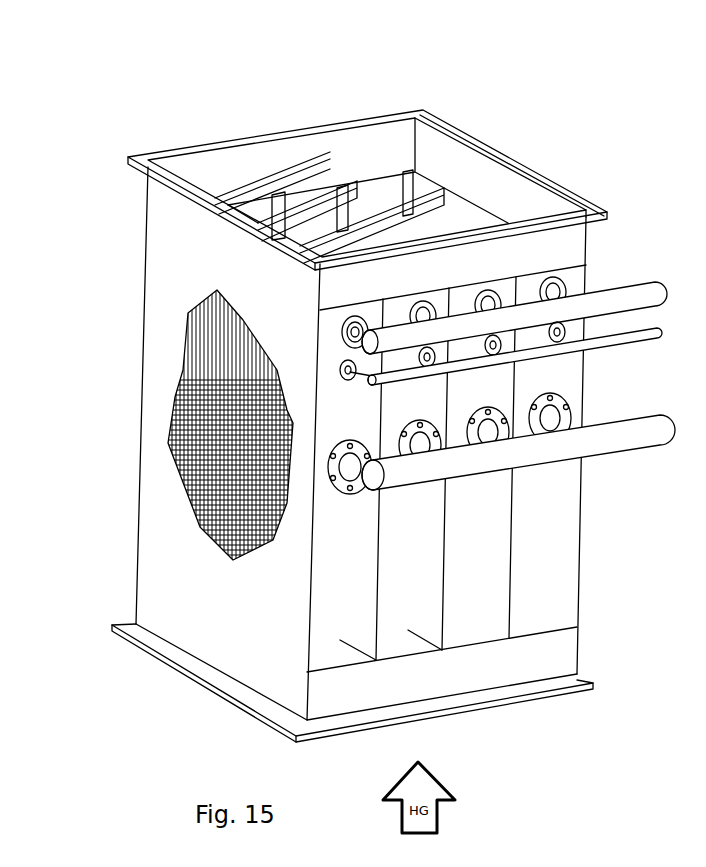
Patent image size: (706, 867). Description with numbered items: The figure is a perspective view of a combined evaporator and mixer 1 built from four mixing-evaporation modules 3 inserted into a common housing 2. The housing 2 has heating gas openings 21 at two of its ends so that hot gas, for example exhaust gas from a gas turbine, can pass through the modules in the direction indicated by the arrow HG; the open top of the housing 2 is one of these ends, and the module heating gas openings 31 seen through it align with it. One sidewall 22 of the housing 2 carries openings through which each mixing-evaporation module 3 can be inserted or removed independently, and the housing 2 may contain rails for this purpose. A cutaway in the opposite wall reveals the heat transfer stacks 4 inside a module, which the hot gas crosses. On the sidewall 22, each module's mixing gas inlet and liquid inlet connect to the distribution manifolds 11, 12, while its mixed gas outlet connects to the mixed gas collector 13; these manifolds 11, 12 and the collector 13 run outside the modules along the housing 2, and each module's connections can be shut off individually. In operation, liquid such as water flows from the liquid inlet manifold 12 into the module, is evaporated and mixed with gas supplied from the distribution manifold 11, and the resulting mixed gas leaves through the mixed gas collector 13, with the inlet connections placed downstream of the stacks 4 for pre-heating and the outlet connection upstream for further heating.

The combined evaporator and mixer 1 is at (163, 272).
The housing 2 is at (273, 675).
The mixing-evaporation module 3 is at (340, 640).
The heat transfer stack 4 is at (267, 490).
The distribution manifold 11 is at (550, 350).
The liquid inlet manifold 12 is at (610, 302).
The mixed gas collector 13 is at (562, 452).
The heating gas openings 21 is at (485, 175).
The sidewall 22 is at (528, 252).
The heating gas openings 31 is at (393, 190).